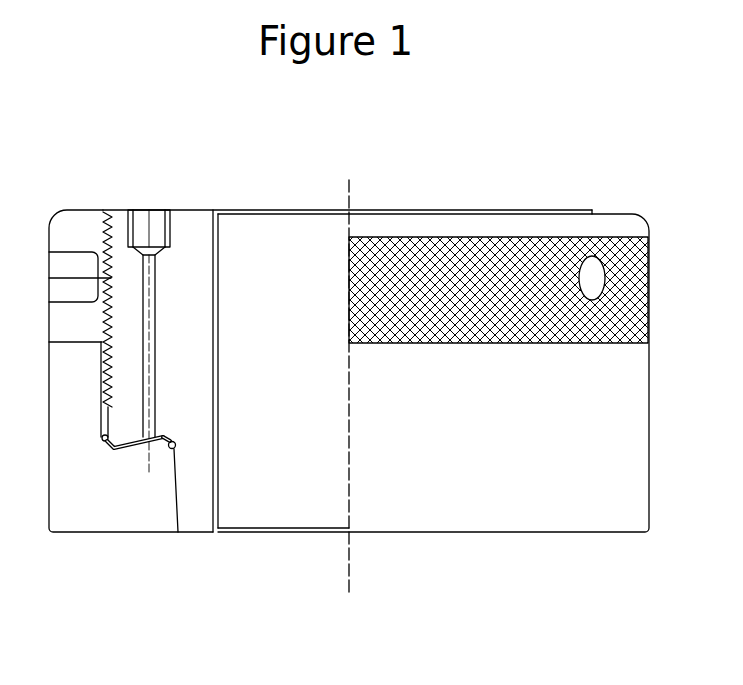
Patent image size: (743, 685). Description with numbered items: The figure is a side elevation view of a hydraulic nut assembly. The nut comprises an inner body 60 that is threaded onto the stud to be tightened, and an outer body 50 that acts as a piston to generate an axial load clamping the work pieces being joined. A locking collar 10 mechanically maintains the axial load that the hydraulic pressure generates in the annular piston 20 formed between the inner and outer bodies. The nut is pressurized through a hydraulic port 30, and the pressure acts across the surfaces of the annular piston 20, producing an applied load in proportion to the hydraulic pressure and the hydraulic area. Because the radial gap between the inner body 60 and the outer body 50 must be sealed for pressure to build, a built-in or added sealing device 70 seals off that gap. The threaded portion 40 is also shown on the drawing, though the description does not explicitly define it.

The locking collar 10 is at (73, 239).
The annular piston 20 is at (137, 451).
The hydraulic port 30 is at (150, 233).
The threaded portion 40 is at (107, 220).
The outer body 50 is at (89, 472).
The inner body 60 is at (193, 366).
The sealing device 70 is at (172, 454).